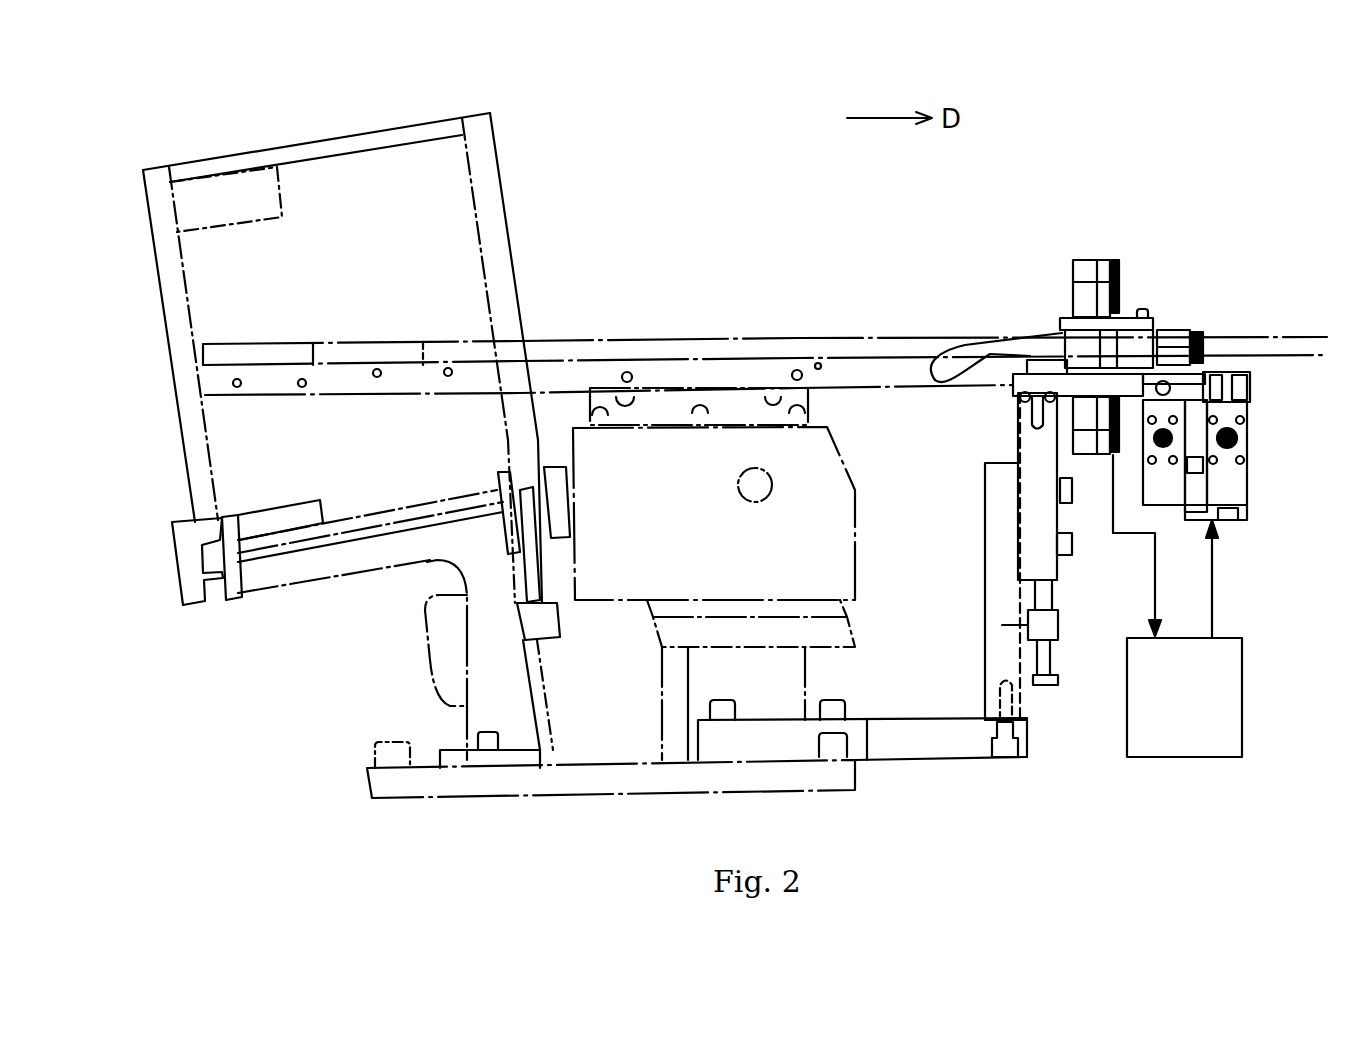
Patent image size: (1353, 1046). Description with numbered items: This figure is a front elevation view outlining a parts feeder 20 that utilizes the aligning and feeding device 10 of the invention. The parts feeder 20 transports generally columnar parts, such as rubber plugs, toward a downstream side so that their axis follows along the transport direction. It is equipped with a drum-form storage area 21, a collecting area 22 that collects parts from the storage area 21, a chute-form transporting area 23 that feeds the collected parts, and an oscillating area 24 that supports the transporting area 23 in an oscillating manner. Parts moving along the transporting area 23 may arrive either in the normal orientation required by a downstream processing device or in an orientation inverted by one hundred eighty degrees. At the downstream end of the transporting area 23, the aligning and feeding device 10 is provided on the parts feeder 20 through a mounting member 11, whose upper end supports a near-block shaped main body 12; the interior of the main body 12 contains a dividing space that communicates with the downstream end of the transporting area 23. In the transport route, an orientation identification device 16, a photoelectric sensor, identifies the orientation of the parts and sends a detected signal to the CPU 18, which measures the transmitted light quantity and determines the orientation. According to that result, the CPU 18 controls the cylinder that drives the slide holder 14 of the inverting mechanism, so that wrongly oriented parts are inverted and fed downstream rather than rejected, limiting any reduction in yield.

The aligning and feeding device 10 is at (1245, 286).
The mounting member 11 is at (1020, 523).
The main body 12 is at (1072, 368).
The slide holder 14 is at (952, 356).
The orientation identification device 16 is at (1120, 288).
The CPU 18 is at (1232, 638).
The parts feeder 20 is at (658, 195).
The storage area 21 is at (355, 128).
The collecting area 22 is at (398, 338).
The transporting area 23 is at (688, 340).
The oscillating area 24 is at (813, 393).